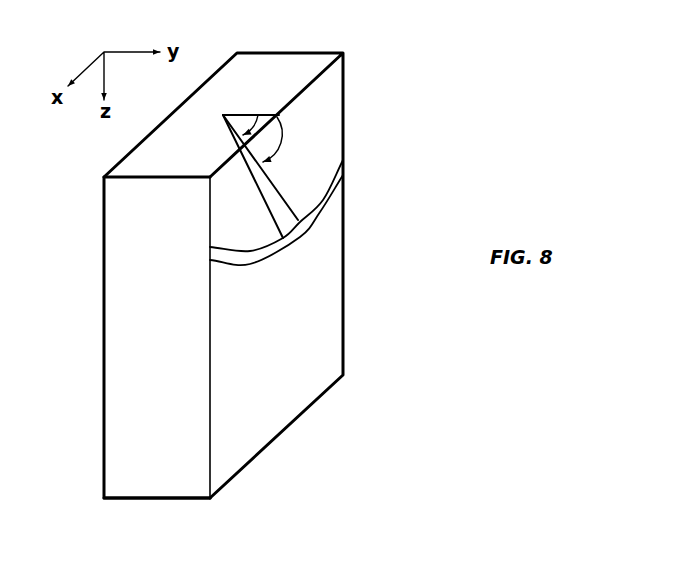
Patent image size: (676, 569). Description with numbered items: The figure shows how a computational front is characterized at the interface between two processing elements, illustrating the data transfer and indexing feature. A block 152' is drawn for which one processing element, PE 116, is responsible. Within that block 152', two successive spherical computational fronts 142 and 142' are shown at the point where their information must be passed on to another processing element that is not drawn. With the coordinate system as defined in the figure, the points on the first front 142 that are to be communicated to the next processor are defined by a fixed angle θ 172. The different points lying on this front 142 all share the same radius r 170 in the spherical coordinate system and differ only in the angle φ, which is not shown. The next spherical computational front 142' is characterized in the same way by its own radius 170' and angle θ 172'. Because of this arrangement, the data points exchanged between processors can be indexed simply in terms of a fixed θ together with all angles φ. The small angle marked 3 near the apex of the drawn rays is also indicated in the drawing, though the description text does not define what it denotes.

The angle 3 is at (229, 112).
The PE 116 is at (183, 312).
The spherical computational front 142 is at (303, 205).
The next spherical computational front 142' is at (306, 220).
The block 152' is at (157, 518).
The radius r 170 is at (274, 167).
The radius 170' is at (251, 176).
The fixed angle θ 172 is at (329, 122).
The angle θ 172' is at (291, 69).